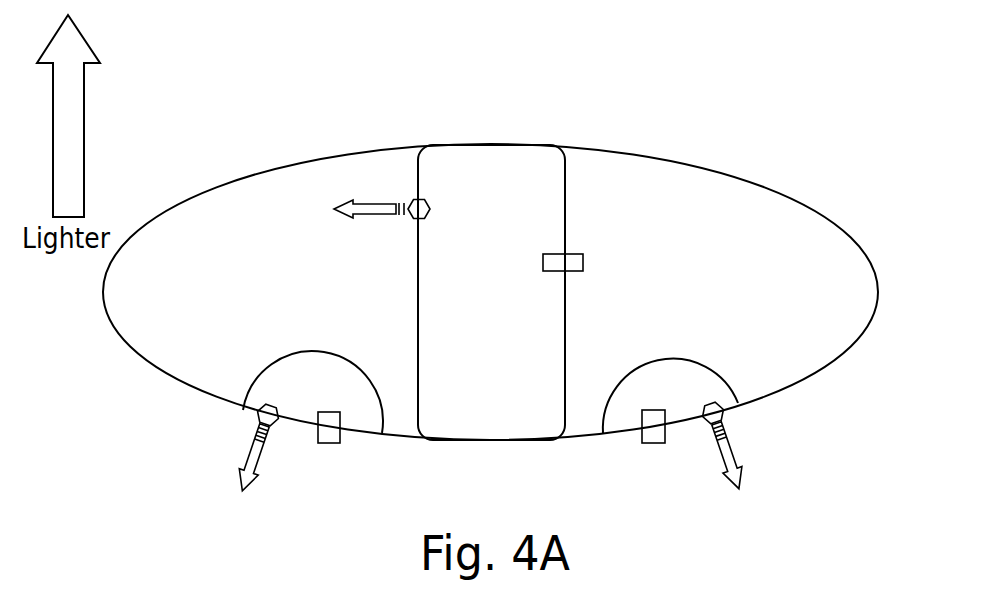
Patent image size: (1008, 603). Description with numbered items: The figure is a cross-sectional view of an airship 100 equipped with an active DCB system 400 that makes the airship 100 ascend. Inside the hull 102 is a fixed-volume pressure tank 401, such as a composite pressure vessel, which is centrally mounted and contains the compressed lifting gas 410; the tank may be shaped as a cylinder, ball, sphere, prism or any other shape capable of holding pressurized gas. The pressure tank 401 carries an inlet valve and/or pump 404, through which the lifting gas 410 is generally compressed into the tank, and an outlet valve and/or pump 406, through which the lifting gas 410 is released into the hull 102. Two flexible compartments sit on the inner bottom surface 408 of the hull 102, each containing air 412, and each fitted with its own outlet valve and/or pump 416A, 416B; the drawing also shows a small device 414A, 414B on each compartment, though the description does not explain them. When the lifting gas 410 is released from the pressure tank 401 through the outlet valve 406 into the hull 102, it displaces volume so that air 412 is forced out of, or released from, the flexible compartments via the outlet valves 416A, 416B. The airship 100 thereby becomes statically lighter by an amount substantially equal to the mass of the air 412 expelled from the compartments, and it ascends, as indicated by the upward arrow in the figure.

The airship 100 is at (291, 79).
The hull 102 is at (715, 165).
The active DCB system 400 is at (281, 269).
The pressure tank 401 is at (566, 207).
The inlet valve and/or pump 404 is at (583, 262).
The outlet valve and/or pump 406 is at (379, 197).
The inner bottom surface 408 is at (400, 438).
The lifting gas 410 is at (515, 303).
The air 412 is at (330, 400).
The valve 414A is at (330, 444).
The valve 414B is at (657, 444).
The outlet valve and/or pump 416A is at (257, 416).
The outlet valve and/or pump 416B is at (725, 414).